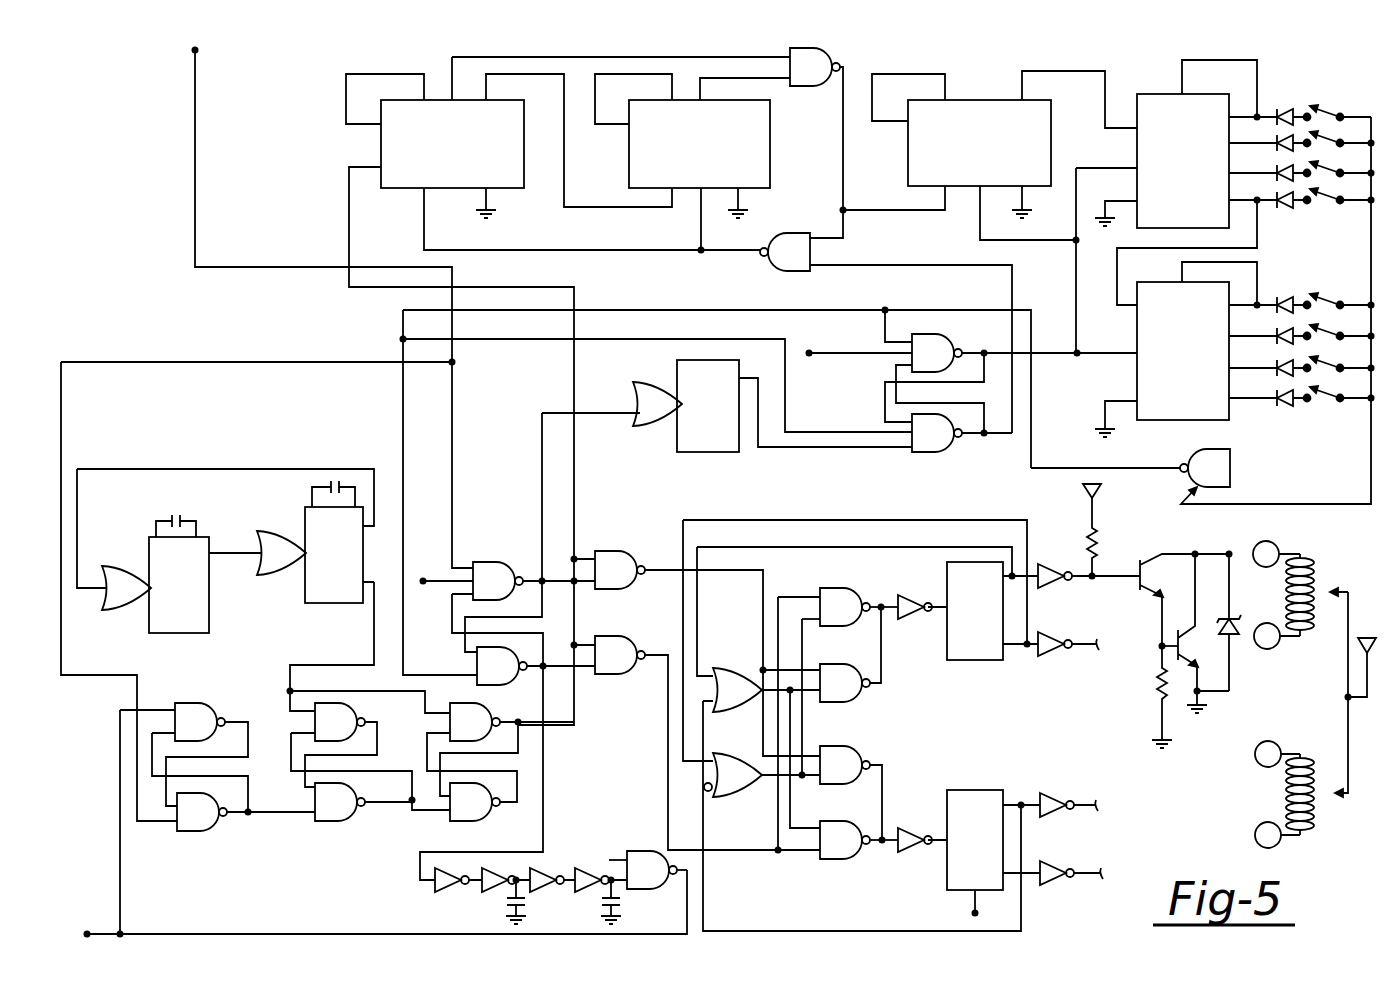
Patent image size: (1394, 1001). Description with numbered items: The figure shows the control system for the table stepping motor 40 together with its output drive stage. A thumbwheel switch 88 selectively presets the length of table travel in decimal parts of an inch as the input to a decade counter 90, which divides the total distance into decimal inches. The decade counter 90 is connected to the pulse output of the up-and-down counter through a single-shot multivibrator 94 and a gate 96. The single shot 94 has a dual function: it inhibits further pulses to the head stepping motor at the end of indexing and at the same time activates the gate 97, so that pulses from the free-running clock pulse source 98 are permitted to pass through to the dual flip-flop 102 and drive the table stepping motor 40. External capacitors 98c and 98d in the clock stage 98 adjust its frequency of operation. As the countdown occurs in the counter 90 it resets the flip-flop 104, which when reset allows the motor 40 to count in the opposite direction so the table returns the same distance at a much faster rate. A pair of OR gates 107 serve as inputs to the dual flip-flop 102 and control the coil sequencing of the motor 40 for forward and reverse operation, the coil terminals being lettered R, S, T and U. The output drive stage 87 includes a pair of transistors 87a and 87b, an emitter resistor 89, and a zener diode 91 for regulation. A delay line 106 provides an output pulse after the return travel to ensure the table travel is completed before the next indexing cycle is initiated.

The table stepping motor 40 is at (1316, 704).
The transistor drive stage 87 is at (1160, 598).
The transistor 87a is at (1151, 600).
The transistor 87b is at (1192, 641).
The thumbwheel switch 88 is at (1357, 207).
The emitter resistor 89 is at (1157, 678).
The decade counter 90 is at (1064, 52).
The zener diode 91 is at (1243, 626).
The single-shot multivibrator 94 is at (718, 483).
The gate 96 is at (899, 477).
The gate 97 is at (320, 863).
The free-running clock pulse source 98 is at (225, 590).
The capacitor 98c is at (184, 521).
The capacitor 98d is at (332, 487).
The dual flip-flop 102 is at (997, 790).
The flip-flop 104 is at (448, 663).
The delay line 106 is at (574, 930).
The OR gates 107 is at (748, 831).